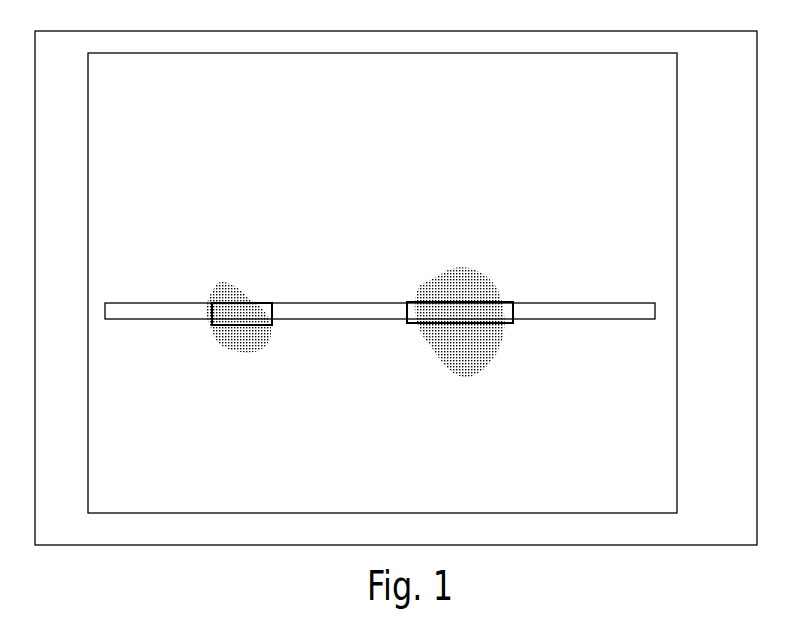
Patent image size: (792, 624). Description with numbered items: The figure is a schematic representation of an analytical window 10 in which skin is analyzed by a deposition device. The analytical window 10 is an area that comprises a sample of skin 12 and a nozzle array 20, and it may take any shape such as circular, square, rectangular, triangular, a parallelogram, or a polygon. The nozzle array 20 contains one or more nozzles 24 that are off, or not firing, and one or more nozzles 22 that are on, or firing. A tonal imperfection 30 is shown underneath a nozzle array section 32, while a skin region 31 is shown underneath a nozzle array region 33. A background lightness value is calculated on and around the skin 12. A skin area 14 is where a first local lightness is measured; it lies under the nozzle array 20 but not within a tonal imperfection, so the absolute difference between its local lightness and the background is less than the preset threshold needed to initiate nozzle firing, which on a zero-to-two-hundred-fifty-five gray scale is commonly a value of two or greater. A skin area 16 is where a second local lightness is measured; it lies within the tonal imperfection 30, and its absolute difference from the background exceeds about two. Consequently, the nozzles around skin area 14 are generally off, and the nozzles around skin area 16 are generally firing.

The analytical window 10 is at (396, 288).
The skin 12 is at (382, 283).
The skin area 14 is at (495, 317).
The skin area 16 is at (268, 325).
The nozzle array 20 is at (661, 311).
The nozzles 22 is at (211, 325).
The nozzles 24 is at (606, 304).
The tonal imperfection 30 is at (248, 354).
The skin region 31 is at (470, 379).
The nozzle array section 32 is at (212, 328).
The nozzle array region 33 is at (498, 340).